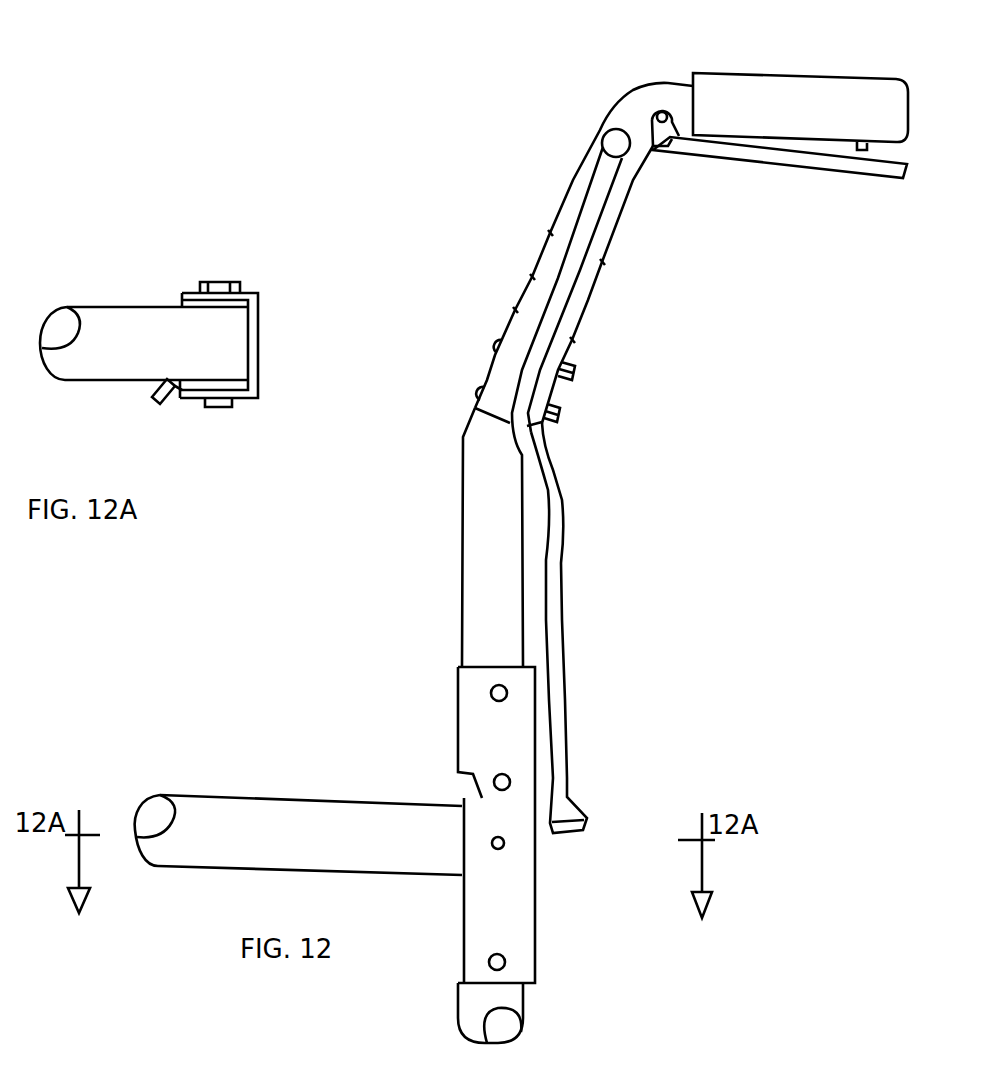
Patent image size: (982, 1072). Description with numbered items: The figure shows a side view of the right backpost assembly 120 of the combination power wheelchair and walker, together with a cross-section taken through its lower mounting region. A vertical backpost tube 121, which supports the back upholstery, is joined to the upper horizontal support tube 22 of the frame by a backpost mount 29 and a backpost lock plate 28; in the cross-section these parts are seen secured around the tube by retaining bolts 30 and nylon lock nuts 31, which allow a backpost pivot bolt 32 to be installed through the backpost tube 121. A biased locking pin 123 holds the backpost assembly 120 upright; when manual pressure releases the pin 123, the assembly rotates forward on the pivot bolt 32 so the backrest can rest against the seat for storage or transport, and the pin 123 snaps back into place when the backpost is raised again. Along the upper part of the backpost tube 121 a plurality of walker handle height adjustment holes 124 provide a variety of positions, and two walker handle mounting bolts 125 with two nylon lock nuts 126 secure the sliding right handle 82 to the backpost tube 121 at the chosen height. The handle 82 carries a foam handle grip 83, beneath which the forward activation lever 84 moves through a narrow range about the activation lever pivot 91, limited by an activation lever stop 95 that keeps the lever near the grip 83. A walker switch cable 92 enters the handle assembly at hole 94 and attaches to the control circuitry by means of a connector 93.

In FIG. 12, the upper horizontal support tube 22 is at (267, 835).
In FIG. 12A, the backpost lock plate 28 is at (155, 401).
In FIG. 12, the backpost mount 29 is at (513, 902).
In FIG. 12A, the backpost mount 29 is at (197, 295).
In FIG. 12, the retaining bolts 30 is at (507, 843).
In FIG. 12A, the retaining bolts 30 is at (219, 409).
In FIG. 12A, the nylon lock nuts 31 is at (217, 277).
In FIG. 12, the backpost pivot bolt 32 is at (508, 782).
In FIG. 12, the right handle 82 is at (628, 103).
In FIG. 12, the foam handle grip 83 is at (806, 80).
In FIG. 12, the forward activation lever 84 is at (795, 157).
In FIG. 12, the activation lever pivot 91 is at (666, 121).
In FIG. 12, the walker switch cable 92 is at (565, 707).
In FIG. 12, the connector 93 is at (567, 808).
In FIG. 12, the hole 94 is at (623, 163).
In FIG. 12, the activation lever stop 95 is at (658, 153).
In FIG. 12, the backpost assembly 120 is at (444, 573).
In FIG. 12, the backpost tube 121 is at (492, 563).
In FIG. 12, the locking pin 123 is at (504, 690).
In FIG. 12, the walker handle height adjustment holes 124 is at (515, 310).
In FIG. 12, the walker handle mounting bolts 125 is at (490, 343).
In FIG. 12, the nylon lock nuts 126 is at (575, 377).